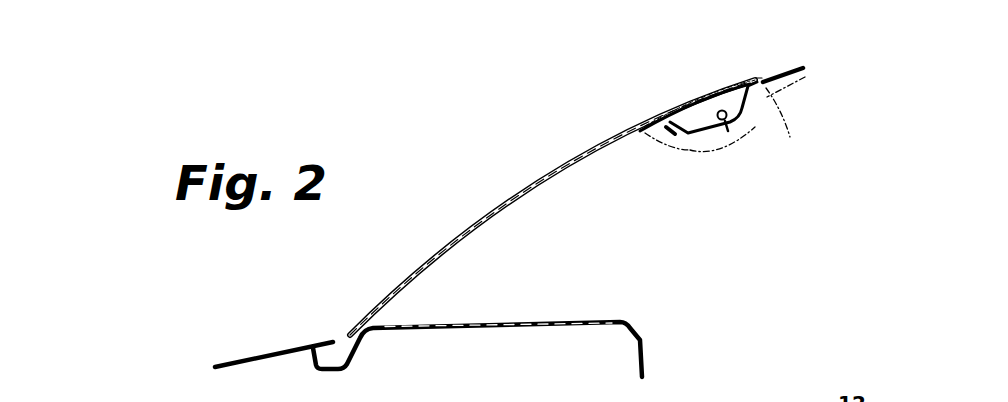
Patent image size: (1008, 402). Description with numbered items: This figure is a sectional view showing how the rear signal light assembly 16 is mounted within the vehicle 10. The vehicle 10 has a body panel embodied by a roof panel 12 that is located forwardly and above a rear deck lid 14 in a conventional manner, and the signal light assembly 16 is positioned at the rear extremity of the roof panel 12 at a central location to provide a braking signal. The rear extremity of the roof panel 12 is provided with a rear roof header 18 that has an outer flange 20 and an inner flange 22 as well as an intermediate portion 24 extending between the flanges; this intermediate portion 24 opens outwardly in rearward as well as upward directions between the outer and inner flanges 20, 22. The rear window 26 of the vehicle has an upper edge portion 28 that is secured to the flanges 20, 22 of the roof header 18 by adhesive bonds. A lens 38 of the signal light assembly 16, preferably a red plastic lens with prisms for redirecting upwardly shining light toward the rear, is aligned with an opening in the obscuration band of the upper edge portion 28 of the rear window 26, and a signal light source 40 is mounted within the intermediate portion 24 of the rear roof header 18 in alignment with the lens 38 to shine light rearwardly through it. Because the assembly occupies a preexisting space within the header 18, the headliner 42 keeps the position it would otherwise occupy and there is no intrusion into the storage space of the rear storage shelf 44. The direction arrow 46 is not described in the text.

The vehicle 10 is at (816, 54).
The roof panel 12 is at (781, 68).
The rear deck lid 14 is at (267, 352).
The rear signal light assembly 16 is at (762, 60).
The rear roof header 18 is at (738, 132).
The outer flange 20 is at (647, 135).
The inner flange 22 is at (763, 87).
The intermediate portion 24 is at (693, 143).
The rear window 26 is at (603, 140).
The upper edge portion 28 is at (752, 77).
The lens 38 is at (698, 102).
The signal light source 40 is at (730, 140).
The headliner 42 is at (787, 128).
The rear storage shelf 44 is at (490, 327).
The direction arrow 46 is at (757, 217).